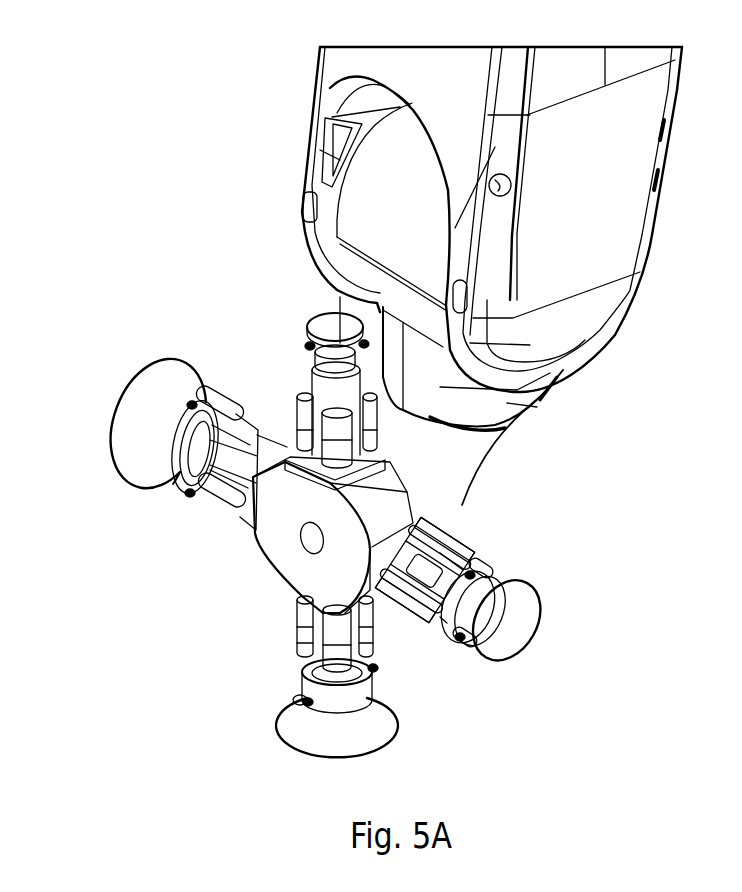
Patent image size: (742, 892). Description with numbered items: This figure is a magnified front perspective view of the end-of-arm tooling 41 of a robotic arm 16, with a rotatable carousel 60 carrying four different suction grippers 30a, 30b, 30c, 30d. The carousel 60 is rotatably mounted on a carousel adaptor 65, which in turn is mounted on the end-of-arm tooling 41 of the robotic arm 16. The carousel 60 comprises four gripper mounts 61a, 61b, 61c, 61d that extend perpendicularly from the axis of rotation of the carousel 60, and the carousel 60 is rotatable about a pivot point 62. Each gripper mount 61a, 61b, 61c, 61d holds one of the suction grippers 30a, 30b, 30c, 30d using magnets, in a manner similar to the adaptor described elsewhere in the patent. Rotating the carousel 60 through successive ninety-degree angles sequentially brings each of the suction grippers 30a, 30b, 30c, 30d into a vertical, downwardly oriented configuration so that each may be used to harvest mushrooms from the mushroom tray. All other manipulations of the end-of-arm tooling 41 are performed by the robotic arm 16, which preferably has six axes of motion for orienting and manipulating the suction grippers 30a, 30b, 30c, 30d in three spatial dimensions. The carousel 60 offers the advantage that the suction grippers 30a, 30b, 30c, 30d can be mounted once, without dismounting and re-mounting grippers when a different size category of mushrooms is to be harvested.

The robotic arm 16 is at (583, 305).
The end-of-arm tooling 41 is at (537, 405).
The carousel adaptor 65 is at (457, 467).
The rotatable carousel 60 is at (290, 566).
The pivot point 62 is at (312, 538).
The suction gripper 30a is at (323, 398).
The suction gripper 30b is at (412, 620).
The suction gripper 30c is at (318, 671).
The suction gripper 30d is at (220, 493).
The gripper mount 61a is at (302, 437).
The gripper mount 61b is at (393, 593).
The gripper mount 61c is at (302, 617).
The gripper mount 61d is at (243, 510).